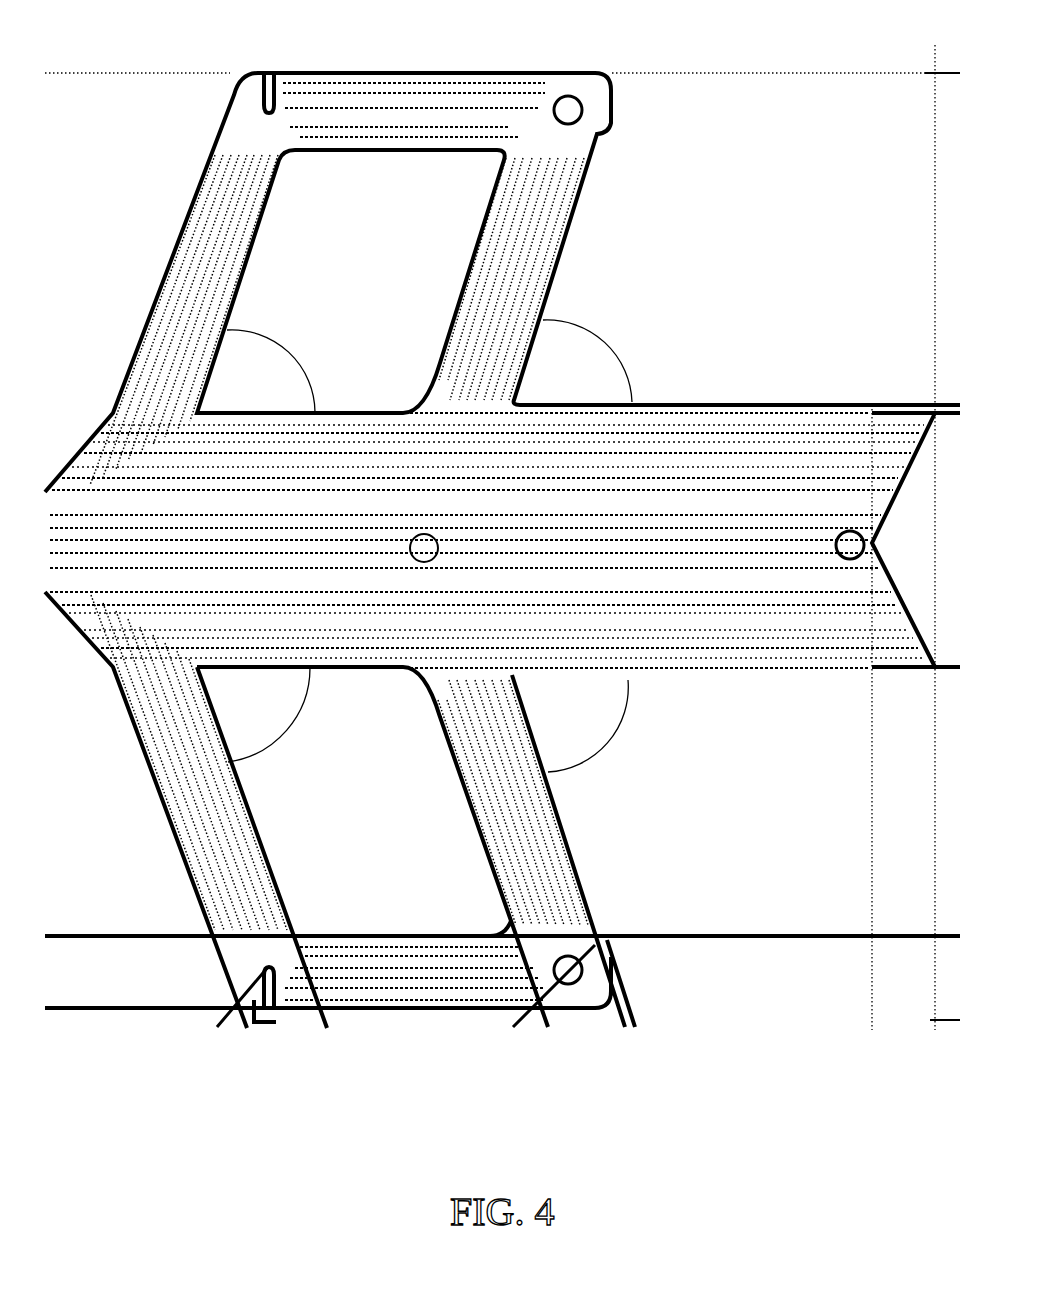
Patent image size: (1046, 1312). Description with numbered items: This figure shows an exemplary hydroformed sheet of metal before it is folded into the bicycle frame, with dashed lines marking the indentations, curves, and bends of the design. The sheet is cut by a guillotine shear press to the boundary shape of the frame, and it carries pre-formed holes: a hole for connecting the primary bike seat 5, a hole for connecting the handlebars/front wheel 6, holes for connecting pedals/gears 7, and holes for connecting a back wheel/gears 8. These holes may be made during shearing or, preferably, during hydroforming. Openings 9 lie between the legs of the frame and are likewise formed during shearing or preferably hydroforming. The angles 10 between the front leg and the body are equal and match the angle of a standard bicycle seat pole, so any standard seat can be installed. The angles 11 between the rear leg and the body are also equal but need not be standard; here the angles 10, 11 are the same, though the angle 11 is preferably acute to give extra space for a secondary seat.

The hole for connecting the primary bike seat 5 is at (434, 538).
The hole for connecting the handlebars/front wheel 6 is at (850, 545).
The holes for connecting pedals/gears 7 is at (585, 1104).
The holes for connecting a back wheel/gears 8 is at (282, 1122).
The openings 9 is at (372, 588).
The angles 10 is at (587, 546).
The angles 11 is at (271, 546).